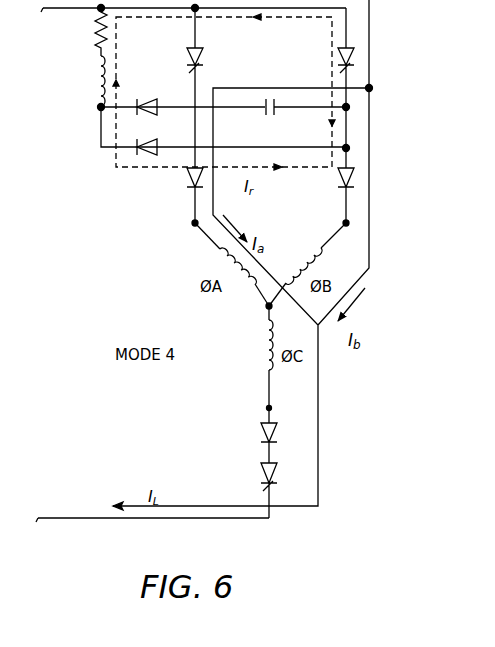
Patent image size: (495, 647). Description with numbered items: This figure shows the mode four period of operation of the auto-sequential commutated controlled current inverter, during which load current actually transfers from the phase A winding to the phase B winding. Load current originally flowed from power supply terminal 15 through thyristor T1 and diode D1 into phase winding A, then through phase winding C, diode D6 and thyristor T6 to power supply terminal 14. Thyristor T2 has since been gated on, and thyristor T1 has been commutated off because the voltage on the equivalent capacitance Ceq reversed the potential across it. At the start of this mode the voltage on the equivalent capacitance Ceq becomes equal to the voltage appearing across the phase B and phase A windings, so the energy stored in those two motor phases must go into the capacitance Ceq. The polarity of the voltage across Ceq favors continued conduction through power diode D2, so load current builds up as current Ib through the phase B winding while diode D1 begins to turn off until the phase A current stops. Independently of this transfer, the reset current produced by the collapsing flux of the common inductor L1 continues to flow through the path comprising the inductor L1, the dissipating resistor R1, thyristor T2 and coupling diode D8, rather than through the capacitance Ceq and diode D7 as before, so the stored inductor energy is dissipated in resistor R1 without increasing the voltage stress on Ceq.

The power supply terminal 15 is at (64, 12).
The power supply terminal 14 is at (70, 521).
The dissipating resistor R1 is at (100, 52).
The common inductor L1 is at (100, 98).
The thyristor T1 is at (198, 60).
The thyristor T2 is at (339, 58).
The thyristor T6 is at (274, 484).
The diode D1 is at (189, 185).
The power diode D2 is at (342, 182).
The diode D6 is at (274, 444).
The diode D7 is at (142, 103).
The coupling diode D8 is at (152, 145).
The equivalent capacitance Ceq is at (271, 113).